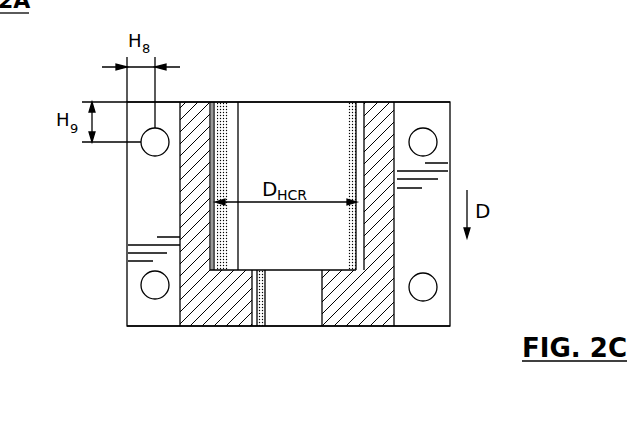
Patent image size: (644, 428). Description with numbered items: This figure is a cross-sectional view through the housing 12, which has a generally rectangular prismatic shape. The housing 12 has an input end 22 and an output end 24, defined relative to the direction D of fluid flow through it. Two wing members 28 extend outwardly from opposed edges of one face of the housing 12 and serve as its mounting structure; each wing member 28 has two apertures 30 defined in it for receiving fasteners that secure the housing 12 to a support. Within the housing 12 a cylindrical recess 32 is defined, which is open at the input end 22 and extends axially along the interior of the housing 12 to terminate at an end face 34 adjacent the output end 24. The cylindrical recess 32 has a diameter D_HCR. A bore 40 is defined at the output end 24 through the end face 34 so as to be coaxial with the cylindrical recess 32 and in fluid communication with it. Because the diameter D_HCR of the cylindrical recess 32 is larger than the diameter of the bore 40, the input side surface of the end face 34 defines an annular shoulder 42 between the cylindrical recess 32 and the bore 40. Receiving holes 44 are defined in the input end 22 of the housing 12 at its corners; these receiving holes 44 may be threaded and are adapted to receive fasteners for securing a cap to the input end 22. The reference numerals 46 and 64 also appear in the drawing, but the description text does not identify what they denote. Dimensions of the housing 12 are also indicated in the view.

The housing 12 is at (143, 185).
The input end 22 is at (253, 88).
The output end 24 is at (258, 335).
The wing members 28 is at (166, 225).
The apertures 30 is at (140, 147).
The cylindrical recess 32 is at (295, 120).
The end face 34 is at (357, 290).
The bore 40 is at (298, 312).
The annular shoulder 42 is at (222, 268).
The receiving holes 44 is at (218, 100).
The gap 46 is at (213, 172).
The passage 64 is at (267, 297).